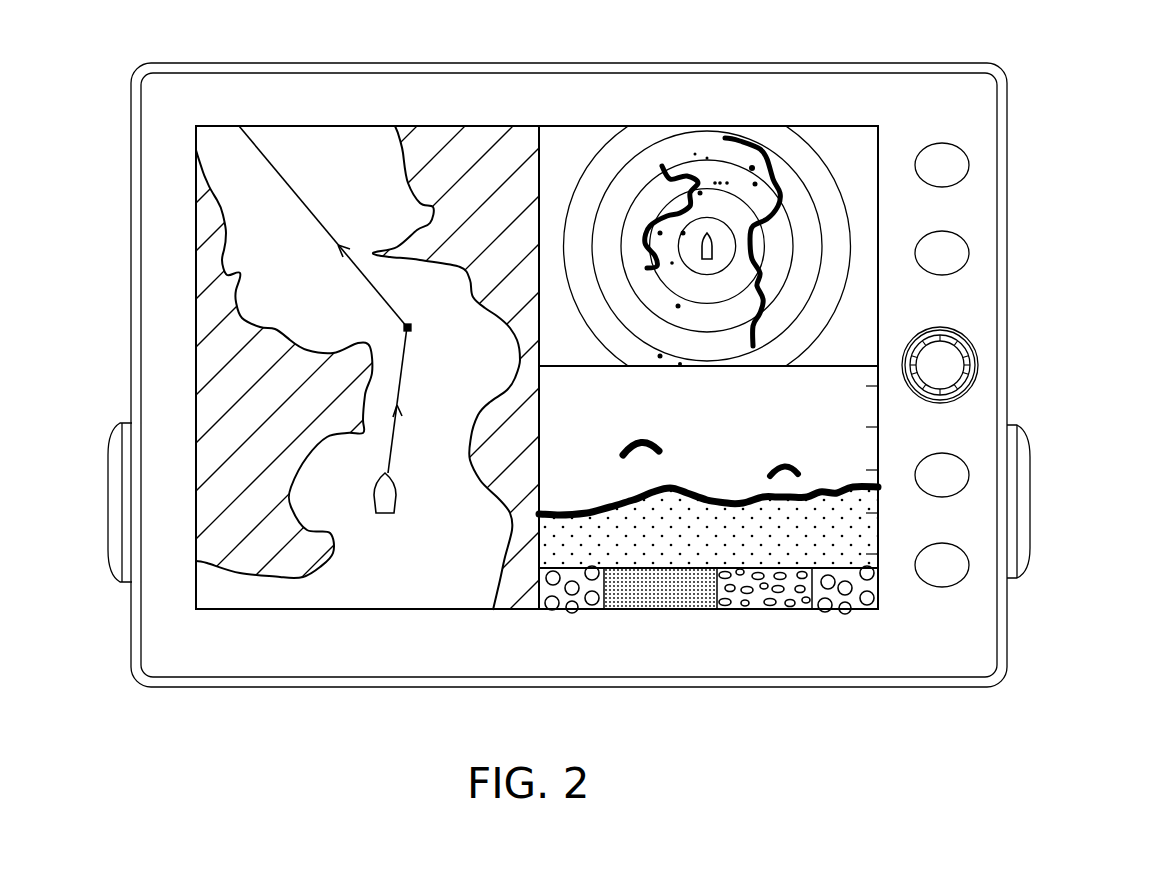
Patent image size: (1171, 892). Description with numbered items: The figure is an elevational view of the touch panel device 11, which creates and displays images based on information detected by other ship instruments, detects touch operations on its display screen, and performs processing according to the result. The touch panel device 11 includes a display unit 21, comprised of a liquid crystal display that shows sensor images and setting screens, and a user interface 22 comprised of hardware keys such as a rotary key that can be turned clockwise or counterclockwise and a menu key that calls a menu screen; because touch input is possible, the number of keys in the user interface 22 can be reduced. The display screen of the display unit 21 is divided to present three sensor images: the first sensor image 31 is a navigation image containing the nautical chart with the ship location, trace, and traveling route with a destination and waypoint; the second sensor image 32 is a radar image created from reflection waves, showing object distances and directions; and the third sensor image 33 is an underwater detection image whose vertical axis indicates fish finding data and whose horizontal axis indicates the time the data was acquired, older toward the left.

The touch panel device 11 is at (1078, 95).
The display unit 21 is at (891, 128).
The user interface 22 is at (982, 333).
The first sensor image 31 is at (196, 157).
The second sensor image 32 is at (873, 223).
The third sensor image 33 is at (878, 543).